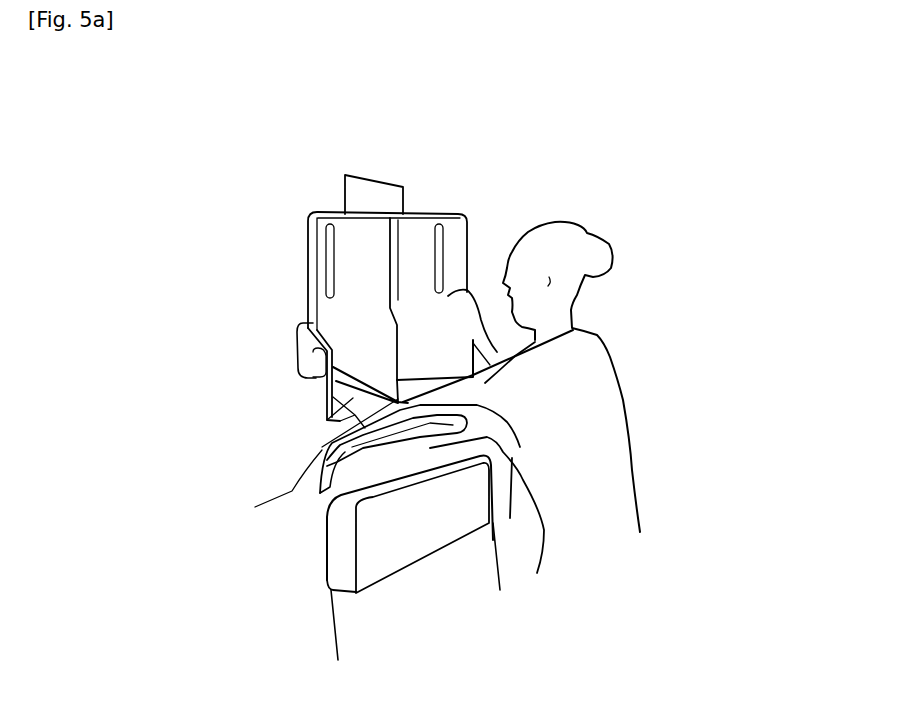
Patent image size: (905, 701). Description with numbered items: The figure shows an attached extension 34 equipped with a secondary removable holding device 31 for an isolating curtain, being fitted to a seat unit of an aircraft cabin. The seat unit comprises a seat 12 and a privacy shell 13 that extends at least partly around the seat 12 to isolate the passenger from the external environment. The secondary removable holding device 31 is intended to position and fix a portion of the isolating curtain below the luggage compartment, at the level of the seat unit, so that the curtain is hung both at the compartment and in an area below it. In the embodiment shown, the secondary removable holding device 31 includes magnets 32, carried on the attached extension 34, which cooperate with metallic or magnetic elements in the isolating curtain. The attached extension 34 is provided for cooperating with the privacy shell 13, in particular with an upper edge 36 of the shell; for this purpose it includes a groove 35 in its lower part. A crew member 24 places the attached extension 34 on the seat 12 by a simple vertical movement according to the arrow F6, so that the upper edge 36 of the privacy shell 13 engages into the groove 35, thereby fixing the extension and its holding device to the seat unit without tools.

The seat 12 is at (367, 598).
The privacy shell 13 is at (310, 505).
The crew member 24 is at (590, 370).
The secondary removable holding device 31 is at (318, 247).
The magnets 32 is at (330, 218).
The attached extension 34 is at (415, 247).
The groove 35 is at (323, 365).
The upper edge 36 is at (322, 447).
The arrow F6 is at (371, 197).